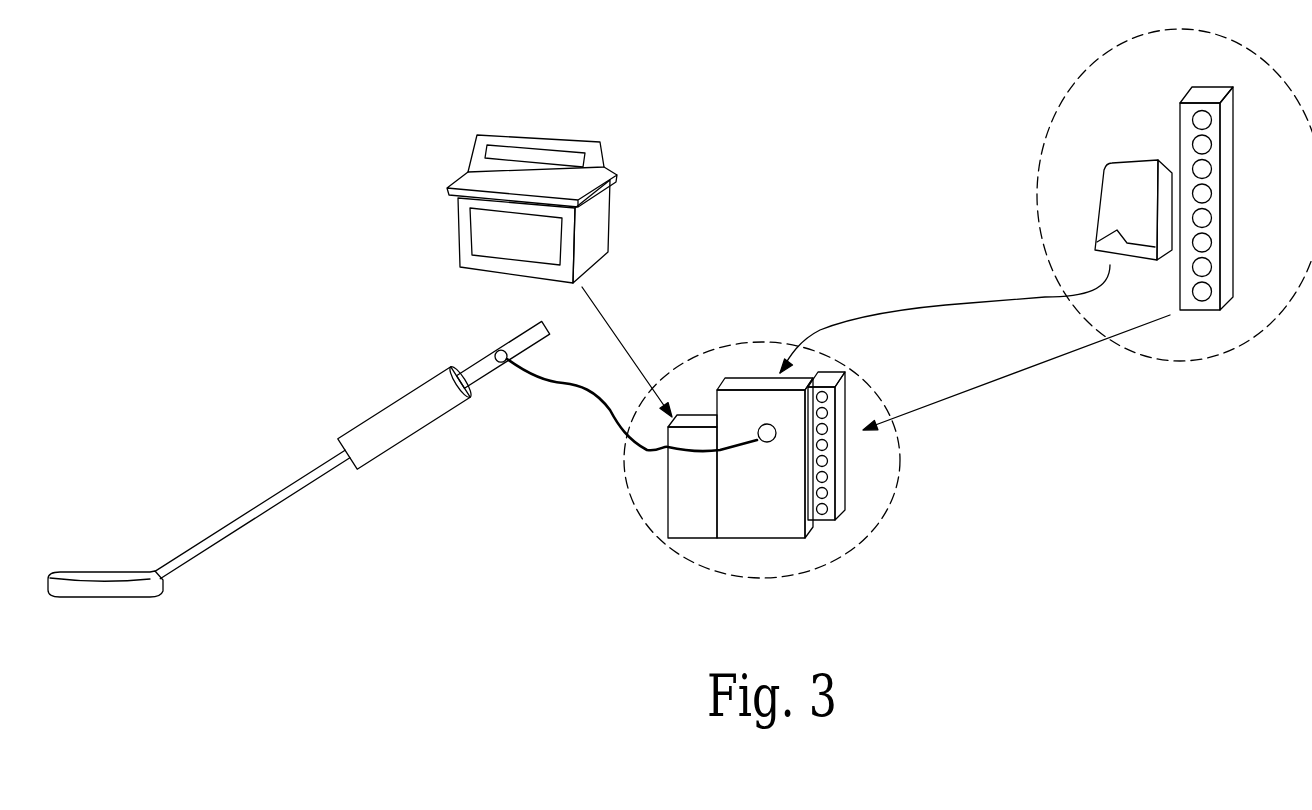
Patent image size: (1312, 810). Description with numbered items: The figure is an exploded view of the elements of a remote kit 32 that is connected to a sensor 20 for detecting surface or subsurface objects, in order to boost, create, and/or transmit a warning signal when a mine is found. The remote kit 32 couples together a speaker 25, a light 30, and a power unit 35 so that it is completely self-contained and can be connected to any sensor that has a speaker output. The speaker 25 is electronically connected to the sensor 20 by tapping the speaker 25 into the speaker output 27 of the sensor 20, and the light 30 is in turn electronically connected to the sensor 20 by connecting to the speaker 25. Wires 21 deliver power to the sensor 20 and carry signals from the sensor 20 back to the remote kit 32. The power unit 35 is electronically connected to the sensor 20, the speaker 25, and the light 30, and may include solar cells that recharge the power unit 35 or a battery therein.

The sensor 20 is at (348, 417).
The wires 21 is at (573, 390).
The speaker 25 is at (1108, 177).
The speaker output 27 is at (765, 423).
The light 30 is at (1235, 183).
The remote kit 32 is at (863, 527).
The power unit 35 is at (470, 170).